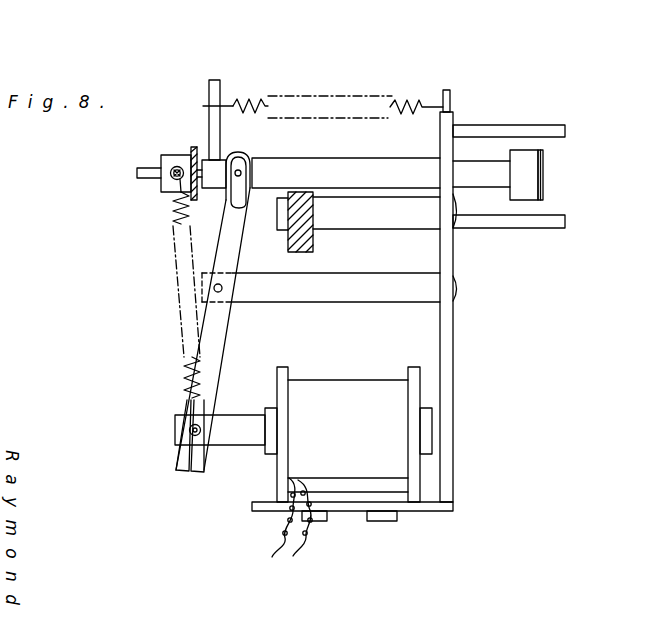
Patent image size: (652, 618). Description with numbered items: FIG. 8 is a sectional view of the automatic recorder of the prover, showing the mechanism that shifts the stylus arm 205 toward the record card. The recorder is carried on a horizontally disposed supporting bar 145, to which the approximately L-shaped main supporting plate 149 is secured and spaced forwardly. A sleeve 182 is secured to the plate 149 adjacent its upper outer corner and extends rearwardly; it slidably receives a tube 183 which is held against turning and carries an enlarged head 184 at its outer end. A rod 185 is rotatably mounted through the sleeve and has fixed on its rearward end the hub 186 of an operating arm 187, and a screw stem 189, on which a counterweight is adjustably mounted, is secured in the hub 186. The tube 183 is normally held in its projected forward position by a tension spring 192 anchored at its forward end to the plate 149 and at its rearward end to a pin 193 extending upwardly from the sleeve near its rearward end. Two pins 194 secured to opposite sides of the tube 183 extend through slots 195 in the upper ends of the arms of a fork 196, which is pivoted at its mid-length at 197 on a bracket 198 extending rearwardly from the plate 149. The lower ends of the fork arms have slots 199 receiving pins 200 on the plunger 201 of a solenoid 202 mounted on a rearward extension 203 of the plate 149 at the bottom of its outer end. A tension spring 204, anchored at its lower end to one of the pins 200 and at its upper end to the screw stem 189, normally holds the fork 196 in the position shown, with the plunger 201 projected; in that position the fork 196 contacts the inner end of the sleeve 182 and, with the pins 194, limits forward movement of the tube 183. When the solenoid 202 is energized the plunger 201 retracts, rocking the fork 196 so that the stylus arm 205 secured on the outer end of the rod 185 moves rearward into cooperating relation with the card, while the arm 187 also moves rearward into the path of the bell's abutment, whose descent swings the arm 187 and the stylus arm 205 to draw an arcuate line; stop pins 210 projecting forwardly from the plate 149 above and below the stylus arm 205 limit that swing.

The supporting bar 145 is at (310, 237).
The main supporting plate 149 is at (446, 317).
The sleeve 182 is at (348, 168).
The tube 183 is at (500, 168).
The enlarged head 184 is at (533, 185).
The rod 185 is at (137, 173).
The hub 186 is at (167, 183).
The operating arm 187 is at (193, 150).
The screw stem 189 is at (172, 169).
The tension spring 192 is at (403, 103).
The pin 193 is at (214, 86).
The pins 194 is at (245, 174).
The slots 195 is at (238, 208).
The fork 196 is at (183, 373).
The pivot 197 is at (221, 292).
The bracket 198 is at (352, 283).
The slots 199 is at (188, 467).
The pins 200 is at (188, 430).
The plunger 201 is at (235, 440).
The solenoid 202 is at (345, 388).
The rearward extension 203 is at (343, 508).
The tension spring 204 is at (175, 218).
The stylus arm 205 is at (545, 153).
The stop pins 210 is at (523, 132).